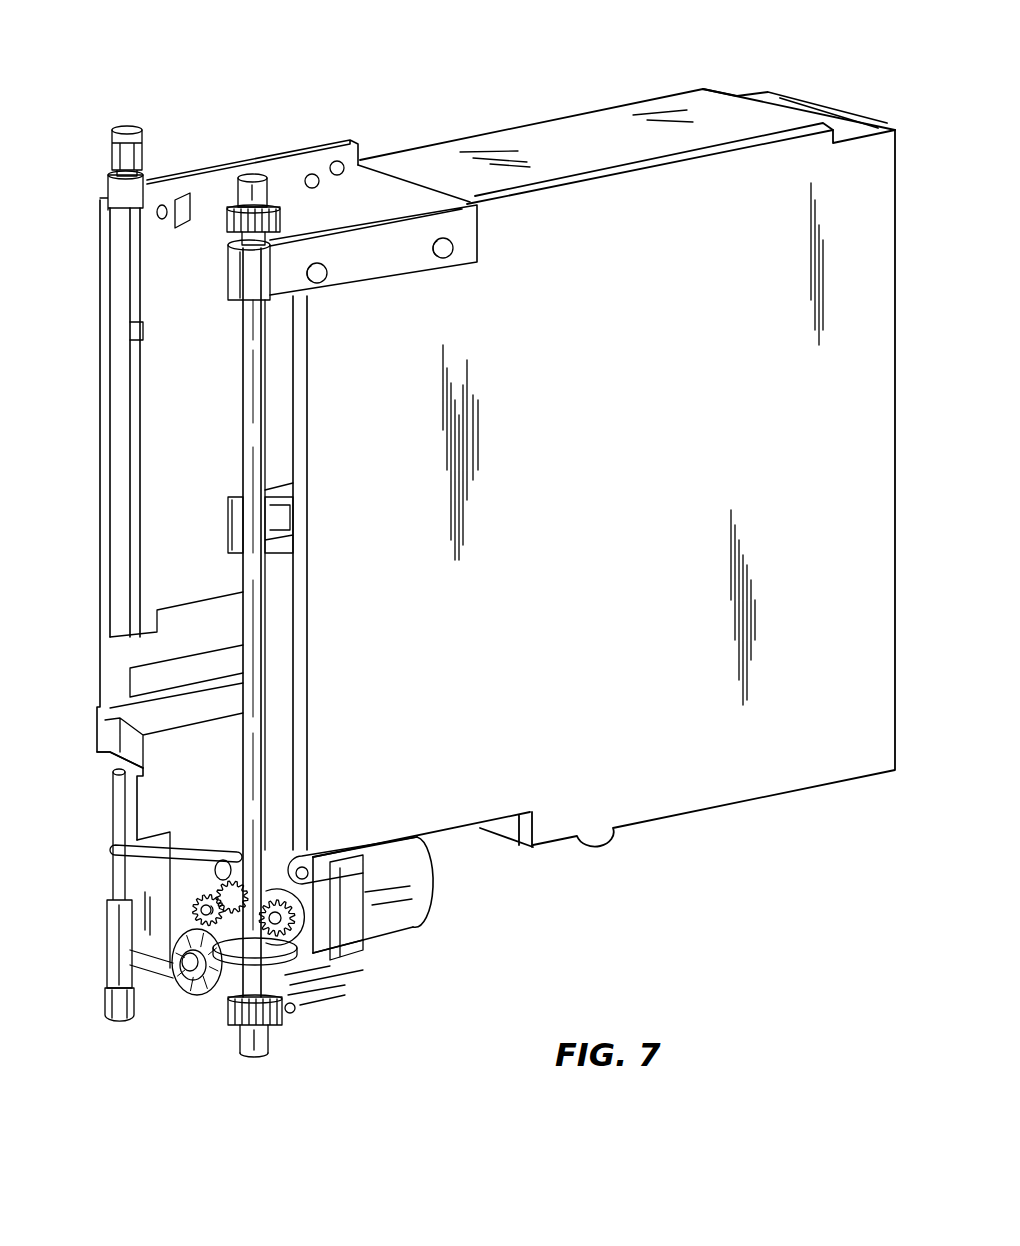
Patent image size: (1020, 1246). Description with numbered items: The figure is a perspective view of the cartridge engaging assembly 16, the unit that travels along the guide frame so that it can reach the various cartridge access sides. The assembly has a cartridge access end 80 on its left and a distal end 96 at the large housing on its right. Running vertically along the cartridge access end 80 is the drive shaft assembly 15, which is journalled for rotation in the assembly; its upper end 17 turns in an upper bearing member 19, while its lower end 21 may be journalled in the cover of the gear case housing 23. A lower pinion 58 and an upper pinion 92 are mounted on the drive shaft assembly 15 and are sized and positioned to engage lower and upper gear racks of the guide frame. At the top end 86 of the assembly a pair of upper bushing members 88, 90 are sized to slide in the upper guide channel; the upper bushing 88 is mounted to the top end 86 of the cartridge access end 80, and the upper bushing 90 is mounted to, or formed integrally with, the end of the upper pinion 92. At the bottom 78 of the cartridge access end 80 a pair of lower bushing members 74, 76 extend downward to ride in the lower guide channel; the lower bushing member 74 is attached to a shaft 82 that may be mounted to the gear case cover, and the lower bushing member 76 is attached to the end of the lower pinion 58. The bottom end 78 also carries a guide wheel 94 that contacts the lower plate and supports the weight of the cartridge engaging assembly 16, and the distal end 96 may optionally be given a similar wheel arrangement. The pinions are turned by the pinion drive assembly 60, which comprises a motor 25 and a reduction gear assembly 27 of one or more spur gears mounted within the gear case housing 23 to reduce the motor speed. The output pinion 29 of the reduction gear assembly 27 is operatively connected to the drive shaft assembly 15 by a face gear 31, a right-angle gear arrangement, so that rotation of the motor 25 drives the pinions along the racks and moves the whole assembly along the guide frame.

The drive shaft assembly 15 is at (266, 459).
The cartridge engaging assembly 16 is at (230, 52).
The upper end of drive shaft assembly 17 is at (267, 373).
The upper bearing member 19 is at (375, 280).
The lower end of drive shaft 21 is at (288, 780).
The gear case housing 23 is at (350, 985).
The motor 25 is at (430, 862).
The reduction gear assembly 27 is at (196, 896).
The output pinion 29 is at (300, 915).
The face gear 31 is at (300, 988).
The lower pinion 58 is at (280, 1028).
The pinion drive assembly 60 is at (432, 904).
The lower bushing member 74 is at (104, 1000).
The lower bushing member 76 is at (238, 1042).
The bottom end 78 is at (105, 763).
The cartridge access end 80 is at (100, 520).
The shaft 82 is at (108, 944).
The top end 86 is at (100, 225).
The upper bushing member 88 is at (110, 133).
The upper bushing member 90 is at (236, 192).
The upper pinion 92 is at (232, 230).
The guide wheel 94 is at (172, 985).
The distal end 96 is at (823, 793).